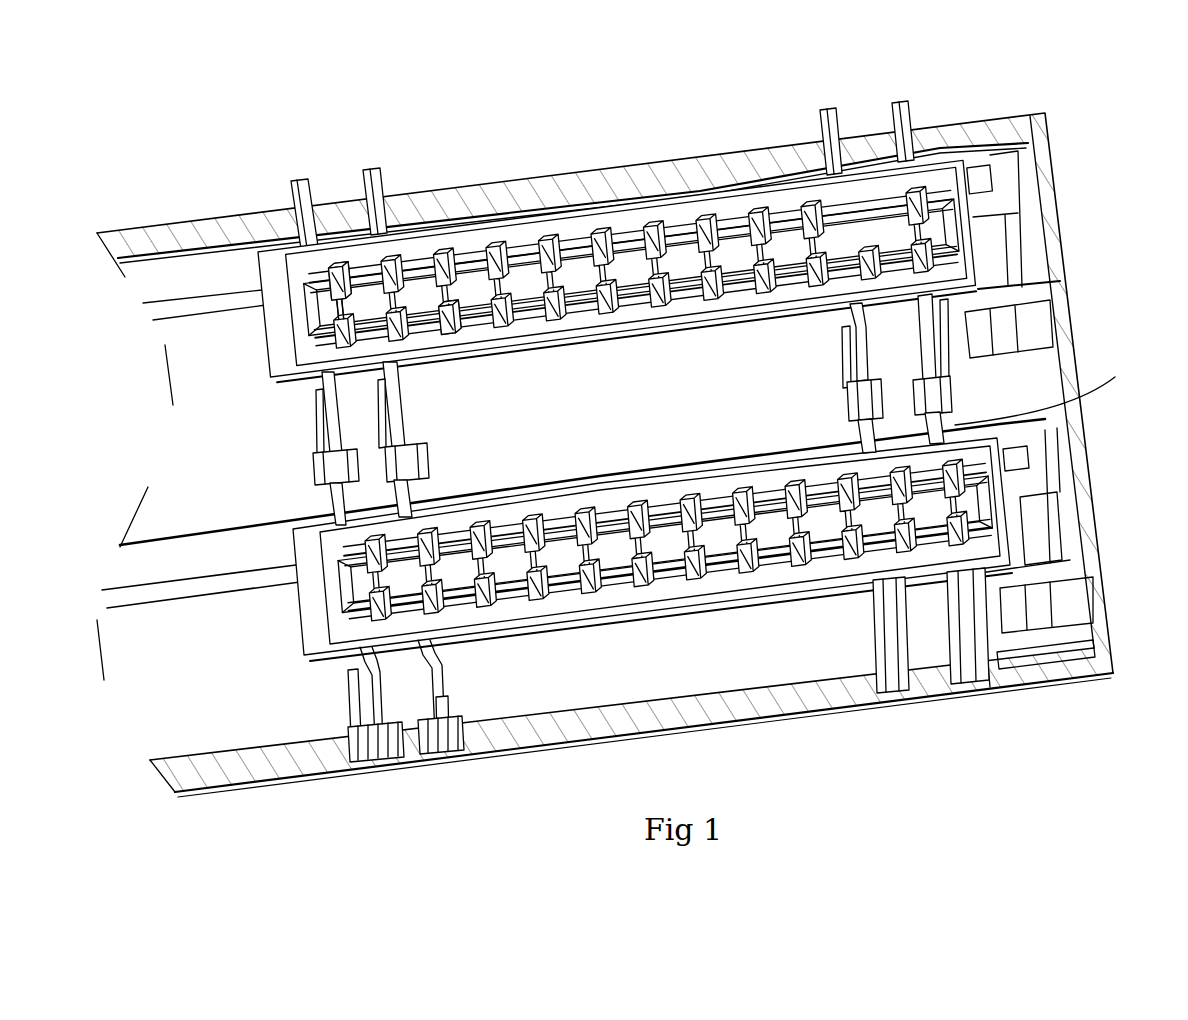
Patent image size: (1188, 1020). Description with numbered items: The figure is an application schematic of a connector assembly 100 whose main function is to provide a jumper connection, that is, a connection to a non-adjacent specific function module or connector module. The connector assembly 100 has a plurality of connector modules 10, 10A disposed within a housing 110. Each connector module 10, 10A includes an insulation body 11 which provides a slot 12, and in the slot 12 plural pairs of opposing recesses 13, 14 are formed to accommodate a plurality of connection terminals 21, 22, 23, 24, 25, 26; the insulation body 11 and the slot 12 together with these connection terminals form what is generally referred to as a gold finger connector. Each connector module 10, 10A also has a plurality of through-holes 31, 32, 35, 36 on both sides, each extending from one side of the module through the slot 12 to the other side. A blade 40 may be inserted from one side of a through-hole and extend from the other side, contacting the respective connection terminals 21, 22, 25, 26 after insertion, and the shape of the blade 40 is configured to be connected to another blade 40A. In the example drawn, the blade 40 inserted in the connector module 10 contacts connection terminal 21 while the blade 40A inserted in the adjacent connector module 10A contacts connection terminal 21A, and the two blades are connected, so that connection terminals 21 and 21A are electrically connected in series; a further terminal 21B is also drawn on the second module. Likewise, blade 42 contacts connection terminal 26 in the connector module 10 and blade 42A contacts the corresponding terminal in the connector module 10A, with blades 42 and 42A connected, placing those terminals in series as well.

The connector module 10 is at (957, 160).
The connector module 10A is at (1003, 520).
The insulation body 11 is at (415, 247).
The slot 12 is at (463, 287).
The recess 13 is at (758, 213).
The recess 14 is at (770, 287).
The connection terminal 21 is at (918, 193).
The connection terminal 21A is at (972, 536).
The contact tab of second connector 21B is at (897, 549).
The connection terminal 22 is at (866, 202).
The connection terminal 23 is at (816, 278).
The connection terminal 24 is at (437, 300).
The connection terminal 25 is at (378, 232).
The connection terminal 26 is at (337, 268).
The through-hole 31 is at (904, 312).
The through-hole 32 is at (866, 310).
The through-hole 35 is at (413, 367).
The through-hole 36 is at (318, 378).
The blade 40 is at (906, 120).
The blade 40A is at (992, 745).
The blade 42 is at (298, 185).
The blade 42A is at (373, 767).
The connector assembly 100 is at (1050, 687).
The housing 110 is at (745, 732).